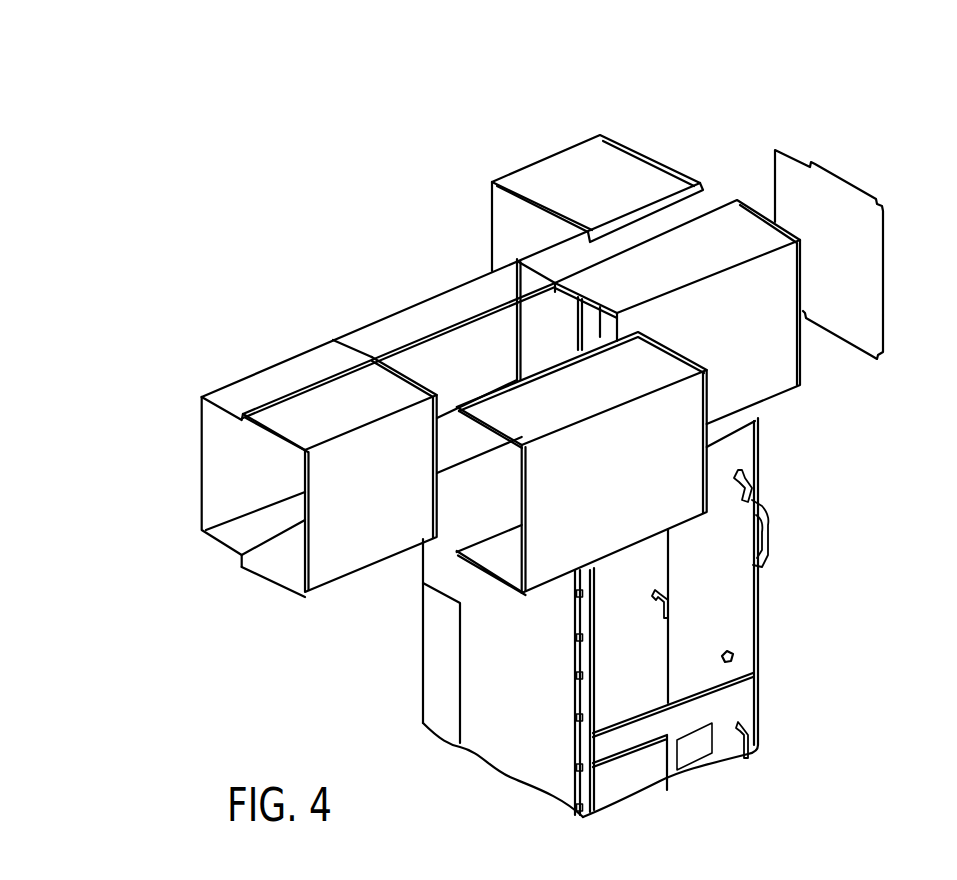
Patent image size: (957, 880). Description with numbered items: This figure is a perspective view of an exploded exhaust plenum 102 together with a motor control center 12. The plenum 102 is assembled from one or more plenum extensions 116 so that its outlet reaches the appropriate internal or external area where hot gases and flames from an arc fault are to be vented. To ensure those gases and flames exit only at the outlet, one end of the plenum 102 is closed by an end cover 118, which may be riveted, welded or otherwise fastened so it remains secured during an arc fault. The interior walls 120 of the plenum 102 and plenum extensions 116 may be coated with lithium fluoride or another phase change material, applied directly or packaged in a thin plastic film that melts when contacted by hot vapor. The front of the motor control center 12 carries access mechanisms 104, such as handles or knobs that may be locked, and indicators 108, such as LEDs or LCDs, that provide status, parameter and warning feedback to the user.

The plenum 102 is at (595, 104).
The motor control center 12 is at (735, 607).
The access mechanism 104 is at (755, 463).
The indicator 108 is at (693, 730).
The plenum extension 116 is at (372, 563).
The end cover 118 is at (848, 180).
The interior wall 120 is at (443, 368).